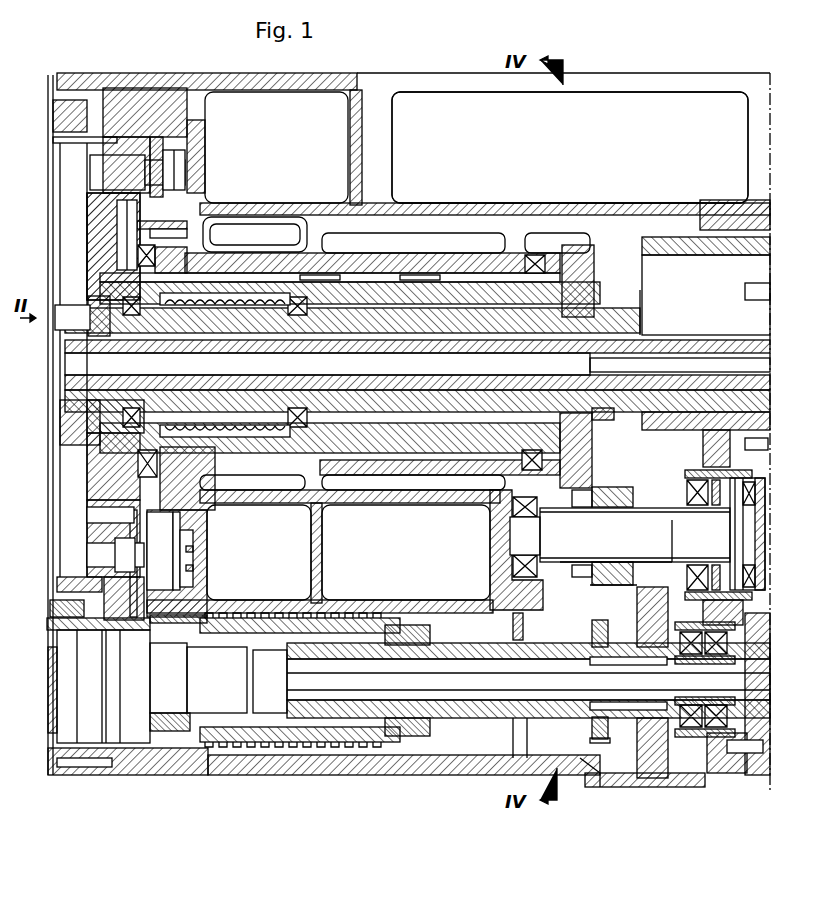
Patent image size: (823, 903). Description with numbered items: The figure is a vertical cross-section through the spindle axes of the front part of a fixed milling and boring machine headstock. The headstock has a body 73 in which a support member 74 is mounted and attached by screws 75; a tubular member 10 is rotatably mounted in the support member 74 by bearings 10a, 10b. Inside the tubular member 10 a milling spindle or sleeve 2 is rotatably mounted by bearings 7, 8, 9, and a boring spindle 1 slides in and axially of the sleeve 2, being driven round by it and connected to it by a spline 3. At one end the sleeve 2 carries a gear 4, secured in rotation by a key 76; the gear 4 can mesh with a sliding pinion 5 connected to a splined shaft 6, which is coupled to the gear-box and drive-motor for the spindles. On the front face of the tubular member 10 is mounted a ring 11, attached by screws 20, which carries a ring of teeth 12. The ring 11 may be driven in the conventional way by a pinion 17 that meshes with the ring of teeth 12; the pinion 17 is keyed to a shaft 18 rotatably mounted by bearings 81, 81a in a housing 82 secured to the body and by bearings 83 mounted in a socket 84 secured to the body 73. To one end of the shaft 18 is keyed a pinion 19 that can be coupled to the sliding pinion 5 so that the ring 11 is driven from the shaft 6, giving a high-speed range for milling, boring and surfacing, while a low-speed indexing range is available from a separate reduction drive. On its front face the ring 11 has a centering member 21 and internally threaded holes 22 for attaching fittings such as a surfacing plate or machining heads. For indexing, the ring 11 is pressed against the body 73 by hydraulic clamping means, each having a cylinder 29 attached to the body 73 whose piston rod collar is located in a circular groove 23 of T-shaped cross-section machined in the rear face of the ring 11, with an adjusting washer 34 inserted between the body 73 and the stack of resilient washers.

The boring spindle 1 is at (405, 386).
The milling spindle or sleeve 2 is at (453, 300).
The spline 3 is at (78, 293).
The gear 4 is at (592, 466).
The sliding pinion 5 is at (630, 490).
The splined shaft 6 is at (652, 520).
The bearing 7 is at (113, 246).
The bearing 8 is at (318, 292).
The bearing 9 is at (350, 367).
The tubular member 10 is at (420, 280).
The bearing 10a is at (148, 260).
The bearing 10b is at (533, 253).
The ring 11 is at (142, 118).
The ring of teeth 12 is at (143, 95).
The pinion 17 is at (103, 686).
The shaft 18 is at (460, 680).
The pinion 19 is at (640, 608).
The screws 20 is at (90, 512).
The centering member 21 is at (83, 433).
The internally threaded holes 22 is at (90, 556).
The circular groove 23 is at (110, 578).
The cylinder 29 is at (165, 518).
The adjusting washer 34 is at (193, 550).
The body 73 is at (358, 140).
The support member 74 is at (388, 257).
The screws 75 is at (177, 233).
The key 76 is at (605, 420).
The bearing 81 is at (177, 718).
The bearing 81a is at (405, 632).
The housing 82 is at (420, 742).
The bearings 83 is at (690, 732).
The socket 84 is at (692, 630).